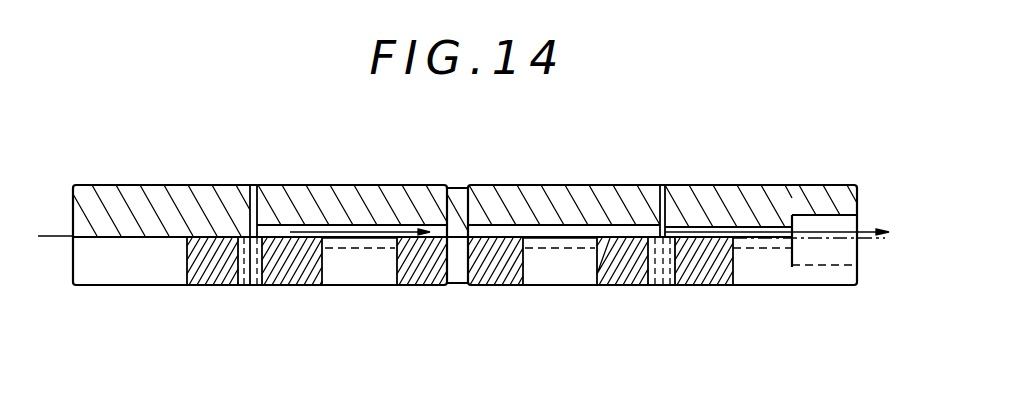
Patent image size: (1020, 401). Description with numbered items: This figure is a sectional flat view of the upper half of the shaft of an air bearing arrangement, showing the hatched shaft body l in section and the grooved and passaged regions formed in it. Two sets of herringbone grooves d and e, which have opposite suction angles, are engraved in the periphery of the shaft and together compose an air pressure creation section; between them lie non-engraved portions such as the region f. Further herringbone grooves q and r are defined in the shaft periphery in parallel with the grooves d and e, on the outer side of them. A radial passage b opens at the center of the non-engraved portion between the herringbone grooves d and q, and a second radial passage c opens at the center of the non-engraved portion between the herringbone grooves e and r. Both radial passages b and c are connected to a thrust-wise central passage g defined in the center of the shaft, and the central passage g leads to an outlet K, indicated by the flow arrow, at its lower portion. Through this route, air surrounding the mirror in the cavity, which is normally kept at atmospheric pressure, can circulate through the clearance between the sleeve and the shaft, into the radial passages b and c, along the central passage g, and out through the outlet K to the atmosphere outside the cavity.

The block body l is at (172, 200).
The radial passage b is at (250, 190).
The radial passage c is at (664, 187).
The thrust-wise central passage g is at (765, 233).
The outlet K is at (843, 225).
The herringbone groove q is at (205, 287).
The herringbone groove d is at (493, 333).
The herringbone groove e is at (628, 335).
The chamber f is at (565, 370).
The herringbone groove r is at (712, 287).